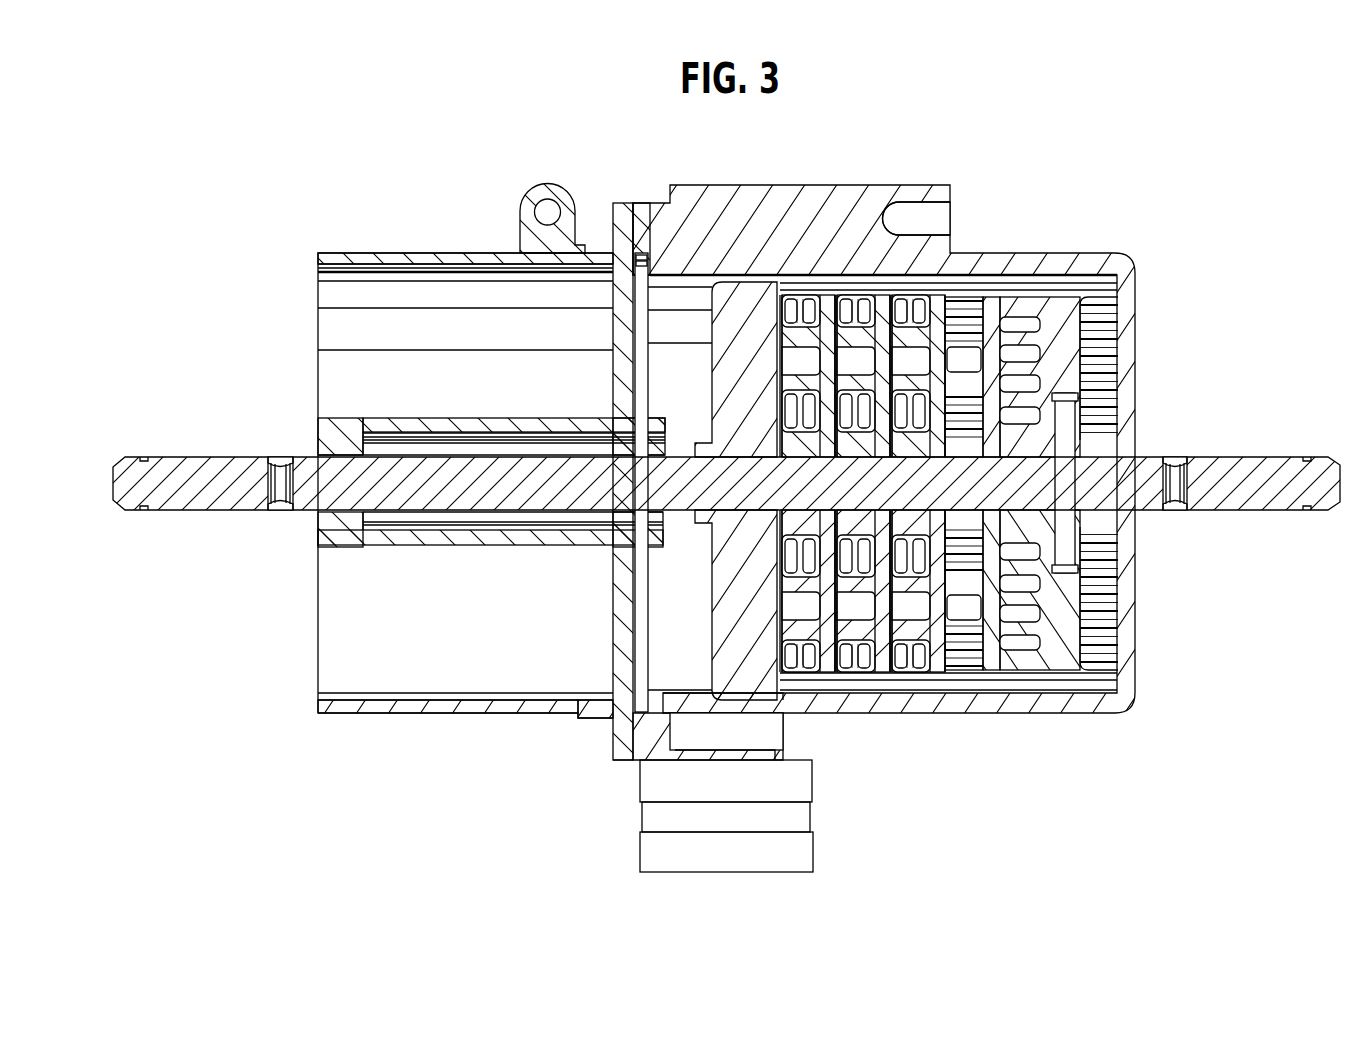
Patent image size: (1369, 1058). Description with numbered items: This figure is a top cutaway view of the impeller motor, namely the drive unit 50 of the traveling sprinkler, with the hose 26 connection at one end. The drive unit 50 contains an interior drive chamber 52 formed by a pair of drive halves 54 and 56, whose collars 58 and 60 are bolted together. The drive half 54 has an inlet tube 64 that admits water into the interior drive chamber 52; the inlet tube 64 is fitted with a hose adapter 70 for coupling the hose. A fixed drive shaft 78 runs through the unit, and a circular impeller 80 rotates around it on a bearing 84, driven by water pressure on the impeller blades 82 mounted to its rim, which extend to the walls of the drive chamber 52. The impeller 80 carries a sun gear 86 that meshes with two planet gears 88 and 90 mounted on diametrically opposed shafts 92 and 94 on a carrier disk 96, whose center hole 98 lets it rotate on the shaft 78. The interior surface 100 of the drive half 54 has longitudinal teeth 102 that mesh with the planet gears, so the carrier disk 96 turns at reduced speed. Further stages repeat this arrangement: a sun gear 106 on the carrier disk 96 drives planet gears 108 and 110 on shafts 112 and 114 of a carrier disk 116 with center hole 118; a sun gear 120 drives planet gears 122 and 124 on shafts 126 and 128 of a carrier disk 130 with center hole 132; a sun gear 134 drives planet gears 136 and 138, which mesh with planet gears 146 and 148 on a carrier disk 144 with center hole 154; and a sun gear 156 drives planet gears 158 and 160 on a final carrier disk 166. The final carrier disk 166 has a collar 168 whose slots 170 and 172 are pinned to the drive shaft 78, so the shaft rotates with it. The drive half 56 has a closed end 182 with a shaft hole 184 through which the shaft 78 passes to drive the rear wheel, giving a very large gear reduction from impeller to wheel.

The power tool 26 is at (823, 853).
The drive unit 50 is at (737, 162).
The interior drive chamber 52 is at (712, 300).
The drive half 54 is at (717, 745).
The drive half 56 is at (512, 717).
The collar 58 is at (637, 760).
The collar 60 is at (617, 742).
The inlet tube 64 is at (693, 720).
The hose adapter 70 is at (672, 862).
The drive shaft 78 is at (317, 475).
The impeller 80 is at (645, 290).
The impeller blades 82 is at (700, 612).
The bearing 84 is at (582, 245).
The sun gear 86 is at (705, 443).
The planet gear 88 is at (822, 468).
The planet gear 90 is at (800, 560).
The shaft 92 is at (797, 355).
The shaft 94 is at (767, 700).
The carrier disk 96 is at (828, 620).
The center hole 98 is at (840, 355).
The interior surface 100 is at (920, 355).
The longitudinal teeth 102 is at (960, 340).
The sun gear 106 is at (865, 468).
The planet gear 108 is at (866, 355).
The planet gear 110 is at (845, 560).
The shaft 112 is at (918, 468).
The shaft 114 is at (873, 620).
The carrier disk 116 is at (890, 560).
The center hole 118 is at (983, 305).
The sun gear 120 is at (915, 620).
The planet gear 122 is at (930, 220).
The planet gear 124 is at (928, 560).
The shaft 126 is at (970, 375).
The shaft 128 is at (960, 620).
The carrier disk 130 is at (972, 560).
The center hole 132 is at (998, 640).
The sun gear 134 is at (1090, 515).
The planet gear 136 is at (1110, 367).
The planet gear 138 is at (1007, 597).
The carrier disk 144 is at (1087, 322).
The planet gear 146 is at (1062, 312).
The planet gear 148 is at (1030, 640).
The center hole 154 is at (1062, 455).
The sun gear 156 is at (1063, 410).
The planet gear 158 is at (1090, 345).
The planet gear 160 is at (1020, 580).
The final carrier disk 166 is at (1072, 308).
The collar 168 is at (1067, 495).
The slot 170 is at (1090, 460).
The slot 172 is at (1075, 545).
The closed end 182 is at (315, 430).
The shaft hole 184 is at (320, 512).